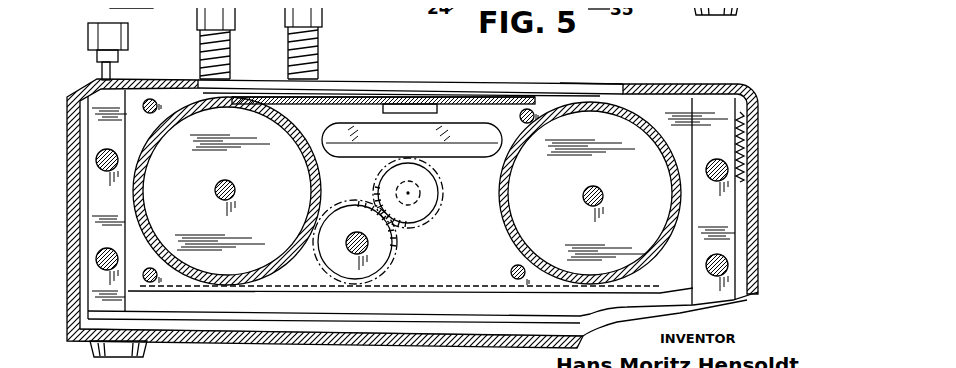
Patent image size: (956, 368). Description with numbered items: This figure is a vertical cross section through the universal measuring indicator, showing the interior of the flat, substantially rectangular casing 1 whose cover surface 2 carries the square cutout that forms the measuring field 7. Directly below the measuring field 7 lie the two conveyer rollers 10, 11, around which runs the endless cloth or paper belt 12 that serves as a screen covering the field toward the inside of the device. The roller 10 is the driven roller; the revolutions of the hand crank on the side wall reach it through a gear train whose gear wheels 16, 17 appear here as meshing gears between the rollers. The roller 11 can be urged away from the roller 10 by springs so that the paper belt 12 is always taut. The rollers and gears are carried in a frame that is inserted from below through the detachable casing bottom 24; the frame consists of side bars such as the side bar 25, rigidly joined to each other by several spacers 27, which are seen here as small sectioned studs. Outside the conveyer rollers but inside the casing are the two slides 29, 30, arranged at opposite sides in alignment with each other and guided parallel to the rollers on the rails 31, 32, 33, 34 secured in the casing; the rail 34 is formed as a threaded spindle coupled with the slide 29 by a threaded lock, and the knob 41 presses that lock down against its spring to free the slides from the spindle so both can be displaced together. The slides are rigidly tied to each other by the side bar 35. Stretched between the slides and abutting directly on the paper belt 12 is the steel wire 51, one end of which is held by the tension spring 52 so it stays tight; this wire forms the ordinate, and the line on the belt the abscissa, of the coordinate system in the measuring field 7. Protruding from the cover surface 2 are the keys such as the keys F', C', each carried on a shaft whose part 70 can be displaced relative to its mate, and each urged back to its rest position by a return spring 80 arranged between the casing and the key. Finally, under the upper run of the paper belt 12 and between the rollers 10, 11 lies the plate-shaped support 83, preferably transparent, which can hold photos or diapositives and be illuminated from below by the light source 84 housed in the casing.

The casing 1 is at (770, 139).
The cover surface 2 is at (693, 88).
The measuring field 7 is at (588, 90).
The conveyer roller 10 is at (640, 110).
The conveyer roller 11 is at (182, 110).
The paper belt 12 is at (502, 100).
The gear wheel 16 is at (442, 201).
The gear wheel 17 is at (393, 257).
The casing bottom 24 is at (400, 341).
The side bar 25 is at (484, 249).
The spacers 27 is at (157, 98).
The slide 29 is at (107, 113).
The slide 30 is at (713, 224).
The rail 31 is at (723, 173).
The rail 32 is at (725, 264).
The rail 33 is at (96, 261).
The threaded spindle 34 is at (97, 162).
The side bar 35 is at (267, 318).
The knob 41 is at (97, 33).
The steel wire 51 is at (475, 97).
The tension spring 52 is at (743, 127).
The shaft part 70 is at (286, 68).
The return spring 80 is at (286, 50).
The plate-shaped support 83 is at (350, 100).
The light source 84 is at (400, 138).
The key F' is at (230, 43).
The key C' is at (326, 43).